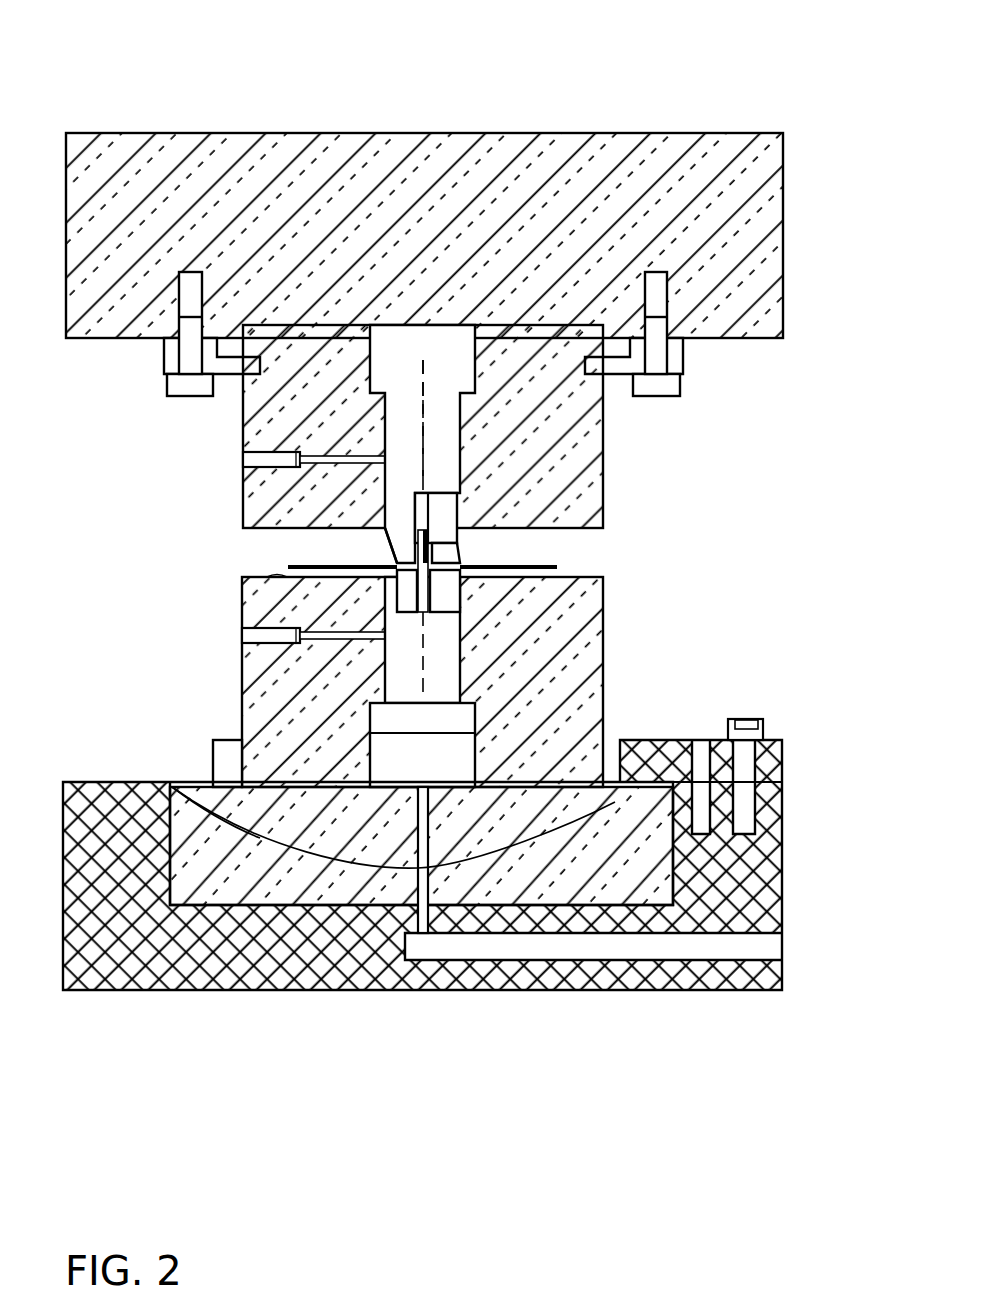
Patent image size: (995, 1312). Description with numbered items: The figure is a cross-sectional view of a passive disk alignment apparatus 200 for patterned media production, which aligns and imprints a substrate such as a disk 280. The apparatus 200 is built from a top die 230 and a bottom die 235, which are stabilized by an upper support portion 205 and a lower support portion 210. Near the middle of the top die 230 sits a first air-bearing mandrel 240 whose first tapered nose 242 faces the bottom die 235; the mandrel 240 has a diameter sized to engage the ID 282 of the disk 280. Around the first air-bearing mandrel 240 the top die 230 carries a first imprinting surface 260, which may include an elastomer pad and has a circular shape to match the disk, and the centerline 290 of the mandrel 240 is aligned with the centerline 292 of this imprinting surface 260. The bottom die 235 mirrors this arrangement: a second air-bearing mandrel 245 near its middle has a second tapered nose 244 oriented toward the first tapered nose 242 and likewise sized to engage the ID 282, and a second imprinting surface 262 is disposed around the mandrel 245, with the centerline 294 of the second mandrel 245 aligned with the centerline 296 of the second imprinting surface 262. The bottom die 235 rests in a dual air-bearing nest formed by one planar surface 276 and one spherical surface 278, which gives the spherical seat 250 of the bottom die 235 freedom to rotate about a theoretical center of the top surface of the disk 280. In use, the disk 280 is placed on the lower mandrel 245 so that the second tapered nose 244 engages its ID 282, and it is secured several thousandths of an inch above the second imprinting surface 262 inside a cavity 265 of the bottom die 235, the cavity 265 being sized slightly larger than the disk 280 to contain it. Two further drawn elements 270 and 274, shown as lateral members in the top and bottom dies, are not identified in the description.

The disk alignment apparatus 200 is at (733, 61).
The support portion 205 is at (764, 197).
The support portion 210 is at (771, 891).
The top die 230 is at (587, 476).
The bottom die 235 is at (568, 703).
The first air-bearing mandrel 240 is at (458, 427).
The first tapered nose 242 is at (384, 540).
The second tapered nose 244 is at (461, 548).
The second air-bearing mandrel 245 is at (458, 632).
The spherical seat 250 is at (567, 810).
The first imprinting surface 260 is at (460, 498).
The second imprinting surface 262 is at (268, 577).
The cavity 265 is at (286, 566).
The upper locating rod 270 is at (383, 483).
The lower locating rod 274 is at (382, 650).
The planar surface 276 is at (235, 786).
The spherical surface 278 is at (240, 812).
The disk 280 is at (560, 566).
The ID of disk 282 is at (458, 560).
The centerline for first air-bearing mandrel 290 is at (435, 170).
The centerline of first imprinting surface 292 is at (420, 280).
The centerline for second air-bearing mandrel 294 is at (418, 335).
The centerline of second imprinting surface 296 is at (423, 360).